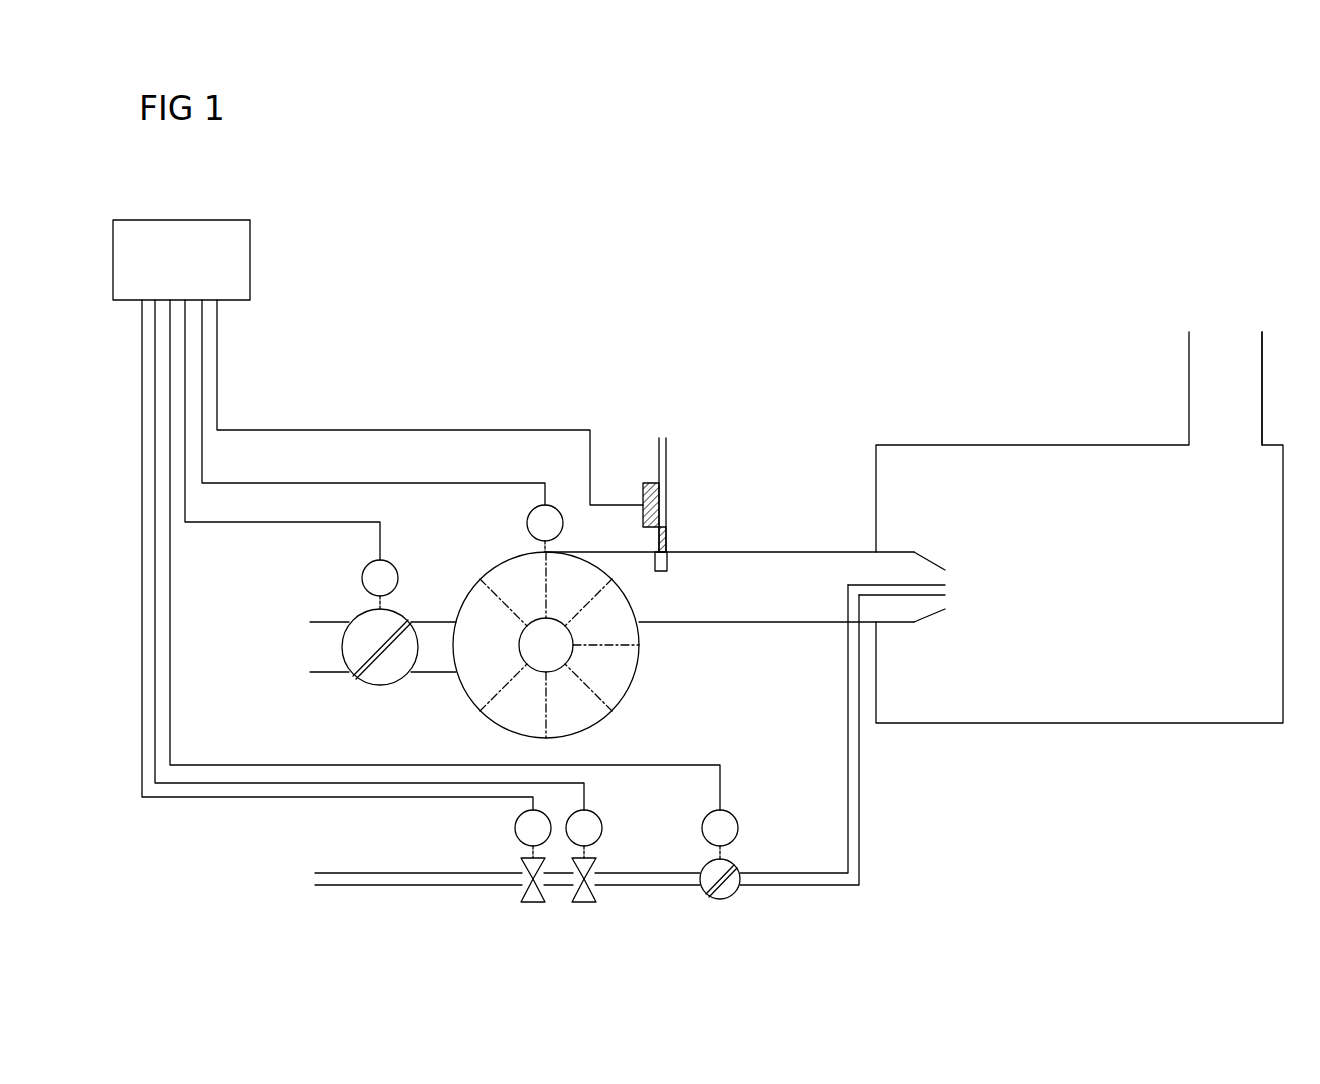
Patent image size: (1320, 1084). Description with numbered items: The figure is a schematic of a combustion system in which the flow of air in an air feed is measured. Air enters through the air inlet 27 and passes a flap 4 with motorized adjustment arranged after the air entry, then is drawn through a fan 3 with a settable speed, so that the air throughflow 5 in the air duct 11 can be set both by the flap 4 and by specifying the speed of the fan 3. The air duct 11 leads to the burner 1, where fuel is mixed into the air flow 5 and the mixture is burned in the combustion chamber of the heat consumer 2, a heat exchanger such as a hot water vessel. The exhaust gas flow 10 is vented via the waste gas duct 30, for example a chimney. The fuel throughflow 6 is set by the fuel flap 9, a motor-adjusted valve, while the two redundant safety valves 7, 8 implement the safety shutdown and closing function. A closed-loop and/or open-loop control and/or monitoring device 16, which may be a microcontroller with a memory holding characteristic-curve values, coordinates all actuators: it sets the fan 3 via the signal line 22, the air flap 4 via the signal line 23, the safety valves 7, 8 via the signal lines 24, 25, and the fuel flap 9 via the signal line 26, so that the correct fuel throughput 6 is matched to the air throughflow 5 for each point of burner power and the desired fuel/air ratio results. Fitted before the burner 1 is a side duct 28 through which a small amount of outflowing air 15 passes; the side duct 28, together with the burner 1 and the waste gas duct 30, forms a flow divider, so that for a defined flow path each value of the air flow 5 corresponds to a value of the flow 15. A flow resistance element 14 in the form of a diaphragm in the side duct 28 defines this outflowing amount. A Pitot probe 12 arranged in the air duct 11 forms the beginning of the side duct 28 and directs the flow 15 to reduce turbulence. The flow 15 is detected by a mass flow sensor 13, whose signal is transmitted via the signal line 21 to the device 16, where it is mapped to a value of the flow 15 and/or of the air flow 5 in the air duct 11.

The burner 1 is at (896, 578).
The heat consumer 2 is at (1079, 527).
The fan 3 is at (546, 621).
The flap with motorized adjustment 4 is at (380, 622).
The air throughflow 5 is at (286, 645).
The fuel throughflow 6 is at (285, 878).
The safety valve 7 is at (522, 856).
The safety valve 8 is at (587, 856).
The fuel flap 9 is at (727, 854).
The exhaust gas flow 10 is at (1223, 325).
The air duct 11 is at (730, 600).
The Pitot probe 12 is at (675, 567).
The mass flow sensor 13 is at (615, 479).
The flow resistance element 14 is at (678, 538).
The outflowing air 15 is at (662, 430).
The closed-loop and/or open-loop control and/or monitoring device 16 is at (181, 260).
The signal line 21 is at (430, 402).
The signal line 22 is at (373, 405).
The signal line 23 is at (282, 430).
The signal line 24 is at (337, 562).
The signal line 25 is at (384, 555).
The signal line 26 is at (460, 555).
The air inlet 27 is at (379, 647).
The side duct 28 is at (668, 495).
The waste gas duct 30 is at (1278, 388).